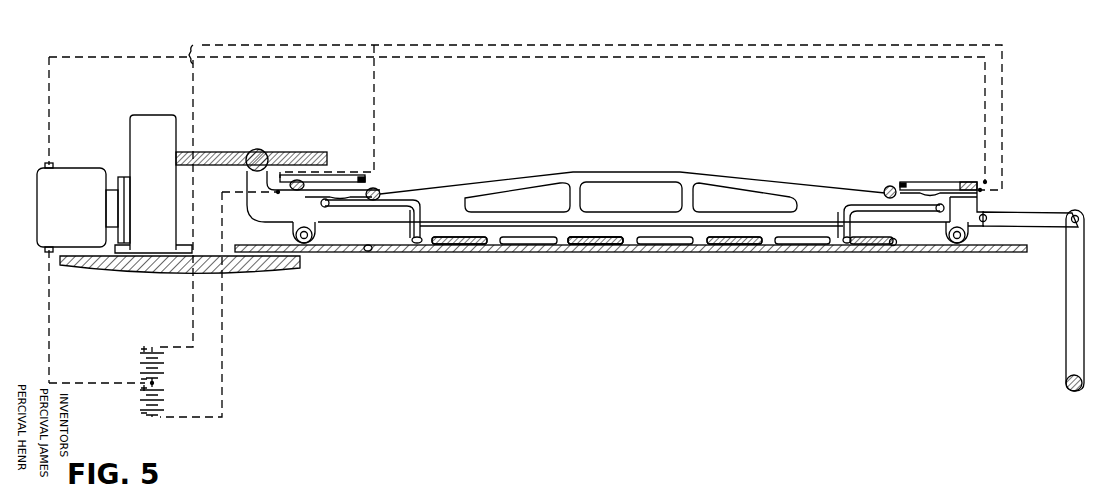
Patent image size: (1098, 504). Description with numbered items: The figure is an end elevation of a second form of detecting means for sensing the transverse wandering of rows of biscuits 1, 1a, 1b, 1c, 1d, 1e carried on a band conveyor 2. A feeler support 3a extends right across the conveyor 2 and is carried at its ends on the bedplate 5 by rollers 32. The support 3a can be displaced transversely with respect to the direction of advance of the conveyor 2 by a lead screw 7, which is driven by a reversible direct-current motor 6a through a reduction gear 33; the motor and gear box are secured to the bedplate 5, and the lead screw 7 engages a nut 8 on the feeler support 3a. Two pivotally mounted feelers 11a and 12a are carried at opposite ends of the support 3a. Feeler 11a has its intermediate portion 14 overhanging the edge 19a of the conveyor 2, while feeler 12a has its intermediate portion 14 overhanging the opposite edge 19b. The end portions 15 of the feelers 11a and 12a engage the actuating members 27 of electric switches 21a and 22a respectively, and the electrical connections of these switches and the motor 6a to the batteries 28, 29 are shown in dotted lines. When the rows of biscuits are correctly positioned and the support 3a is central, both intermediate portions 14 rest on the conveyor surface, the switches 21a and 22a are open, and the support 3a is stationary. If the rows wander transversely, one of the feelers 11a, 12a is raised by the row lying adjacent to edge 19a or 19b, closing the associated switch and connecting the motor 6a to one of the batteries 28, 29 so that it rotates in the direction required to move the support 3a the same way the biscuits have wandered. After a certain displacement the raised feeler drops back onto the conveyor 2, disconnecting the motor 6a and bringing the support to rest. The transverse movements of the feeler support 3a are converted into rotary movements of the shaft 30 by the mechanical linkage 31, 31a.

The reversible D.C. motor 6a is at (83, 207).
The reduction gear 33 is at (153, 184).
The lead screw 7 is at (313, 153).
The nut 8 is at (255, 148).
The electric switch 22a is at (345, 172).
The actuating member 27 is at (376, 192).
The feeler 12a is at (420, 198).
The feeler 11a is at (838, 200).
The feeler support 3a is at (633, 171).
The end portion 15 is at (356, 210).
The intermediate portion 14 is at (412, 253).
The conveyor 2 is at (482, 245).
The row of biscuits 1 is at (466, 247).
The row of biscuits 1a is at (526, 250).
The row of biscuits 1b is at (600, 247).
The row of biscuits 1c is at (668, 247).
The row of biscuits 1d is at (736, 247).
The row of biscuits 1e is at (801, 247).
The bedplate 5 is at (604, 254).
The edge of the conveyor 19a is at (894, 253).
The edge of the conveyor 19b is at (368, 253).
The roller 32 is at (311, 246).
The electric switch 21a is at (921, 181).
The mechanical linkage 31 is at (1051, 211).
The mechanical linkage 31a is at (1066, 316).
The shaft 30 is at (1064, 383).
The battery 28 is at (140, 362).
The battery 29 is at (140, 400).